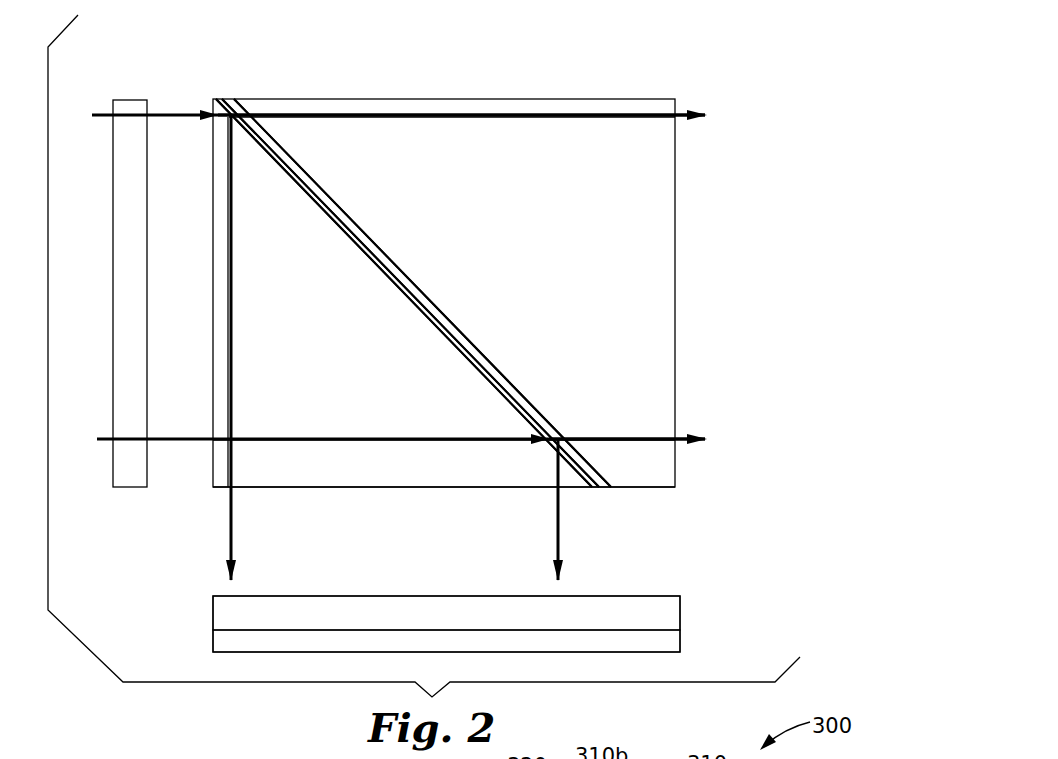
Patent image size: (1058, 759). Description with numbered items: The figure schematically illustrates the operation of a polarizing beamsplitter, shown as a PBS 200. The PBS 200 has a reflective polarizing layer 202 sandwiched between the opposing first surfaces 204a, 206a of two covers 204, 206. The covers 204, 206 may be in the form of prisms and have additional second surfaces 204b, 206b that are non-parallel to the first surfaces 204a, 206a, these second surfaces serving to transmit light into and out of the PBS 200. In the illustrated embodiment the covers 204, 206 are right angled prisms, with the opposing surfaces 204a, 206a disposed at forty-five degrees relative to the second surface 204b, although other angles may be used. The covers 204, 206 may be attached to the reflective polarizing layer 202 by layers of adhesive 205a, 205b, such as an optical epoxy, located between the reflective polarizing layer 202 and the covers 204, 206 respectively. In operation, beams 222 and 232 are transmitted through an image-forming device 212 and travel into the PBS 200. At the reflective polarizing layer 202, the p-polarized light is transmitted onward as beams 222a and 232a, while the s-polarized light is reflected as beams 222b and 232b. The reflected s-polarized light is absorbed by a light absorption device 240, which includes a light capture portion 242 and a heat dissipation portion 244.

The PBS 200 is at (692, 44).
The reflective polarizing layer 202 is at (611, 488).
The cover 204 is at (210, 480).
The first surface 204a is at (590, 488).
The second surface 204b is at (329, 488).
The layer of adhesive 205a is at (601, 488).
The layer of adhesive 205b is at (622, 487).
The cover 206 is at (676, 270).
The first surface 206a is at (615, 473).
The second surface 206b is at (577, 99).
The image-forming device 212 is at (128, 101).
The beam 222 is at (178, 115).
The beam 222a is at (408, 114).
The beam 222b is at (227, 540).
The beam 232 is at (182, 439).
The beam 232a is at (655, 438).
The beam 232b is at (555, 541).
The light absorption device 240 is at (210, 617).
The light capture portion 242 is at (674, 613).
The heat dissipation portion 244 is at (674, 641).